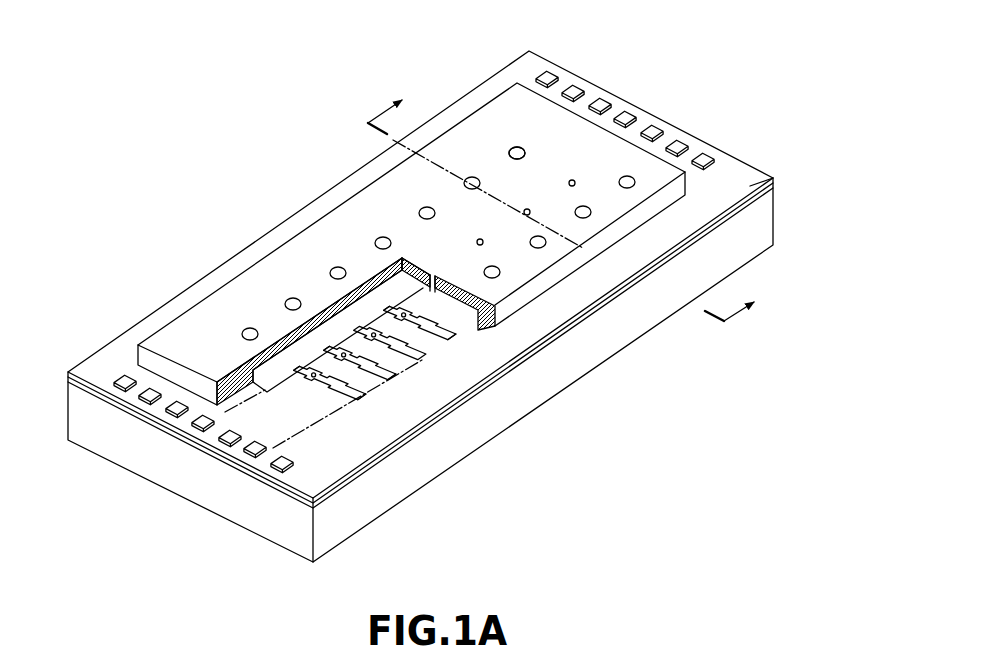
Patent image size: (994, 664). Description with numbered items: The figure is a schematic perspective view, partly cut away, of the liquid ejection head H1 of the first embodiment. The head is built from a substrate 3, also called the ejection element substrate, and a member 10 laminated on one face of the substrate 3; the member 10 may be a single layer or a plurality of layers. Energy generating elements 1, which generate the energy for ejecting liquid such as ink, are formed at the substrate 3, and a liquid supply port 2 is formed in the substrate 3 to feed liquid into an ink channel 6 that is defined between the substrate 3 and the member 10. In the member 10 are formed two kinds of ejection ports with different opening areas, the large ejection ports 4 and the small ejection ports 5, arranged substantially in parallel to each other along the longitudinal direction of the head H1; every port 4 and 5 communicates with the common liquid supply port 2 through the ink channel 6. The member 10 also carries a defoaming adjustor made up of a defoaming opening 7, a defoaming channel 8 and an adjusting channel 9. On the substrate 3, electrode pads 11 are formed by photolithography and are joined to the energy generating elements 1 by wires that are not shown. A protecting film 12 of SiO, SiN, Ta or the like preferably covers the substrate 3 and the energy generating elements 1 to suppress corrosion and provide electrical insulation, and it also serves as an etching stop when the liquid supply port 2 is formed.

The liquid ejection head H1 is at (660, 67).
The energy generating element 1 is at (362, 360).
The liquid supply port 2 is at (320, 398).
The substrate 3 is at (611, 342).
The large ejection port 4 is at (514, 146).
The small ejection port 5 is at (571, 178).
The ink channel 6 is at (192, 318).
The defoaming opening 7 is at (641, 172).
The defoaming channel 8 is at (370, 388).
The adjusting channel 9 is at (430, 374).
The member 10 is at (243, 285).
The electrode pad 11 is at (112, 400).
The protecting film 12 is at (746, 180).